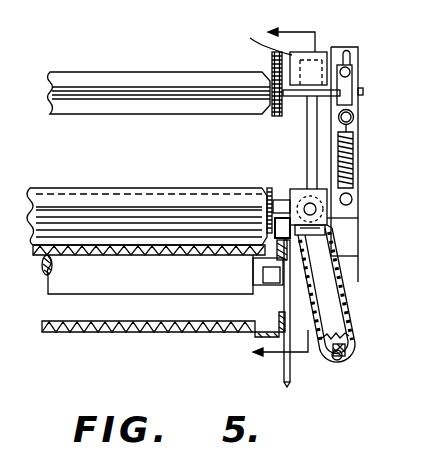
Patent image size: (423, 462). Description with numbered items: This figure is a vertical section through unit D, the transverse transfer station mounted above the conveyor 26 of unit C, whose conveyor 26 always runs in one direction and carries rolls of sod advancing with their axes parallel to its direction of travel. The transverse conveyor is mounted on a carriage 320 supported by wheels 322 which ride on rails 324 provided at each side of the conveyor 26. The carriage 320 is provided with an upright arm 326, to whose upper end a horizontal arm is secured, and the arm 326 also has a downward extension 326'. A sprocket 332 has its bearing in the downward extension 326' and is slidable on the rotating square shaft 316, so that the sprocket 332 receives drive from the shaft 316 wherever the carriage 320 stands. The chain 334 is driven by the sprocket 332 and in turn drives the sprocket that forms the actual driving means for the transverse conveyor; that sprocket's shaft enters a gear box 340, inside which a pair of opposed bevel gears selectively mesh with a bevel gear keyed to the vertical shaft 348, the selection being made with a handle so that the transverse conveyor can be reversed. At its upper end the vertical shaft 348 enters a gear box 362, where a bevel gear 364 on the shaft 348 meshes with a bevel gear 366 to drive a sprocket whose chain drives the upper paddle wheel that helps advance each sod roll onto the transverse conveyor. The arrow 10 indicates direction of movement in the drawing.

The direction of movement arrow 10 is at (297, 202).
The conveyor 26 is at (97, 256).
The rotating square shaft 316 is at (338, 370).
The carriage 320 is at (328, 188).
The wheels 322 is at (330, 240).
The rails 324 is at (295, 258).
The upright arm 326 is at (365, 164).
The downward extension 326' is at (366, 280).
The sprocket 332 is at (348, 358).
The chain 334 is at (350, 332).
The gear box 340 is at (297, 192).
The shaft 348 is at (310, 146).
The gear box 362 is at (292, 55).
The bevel gear 364 is at (292, 97).
The bevel gear 366 is at (290, 68).